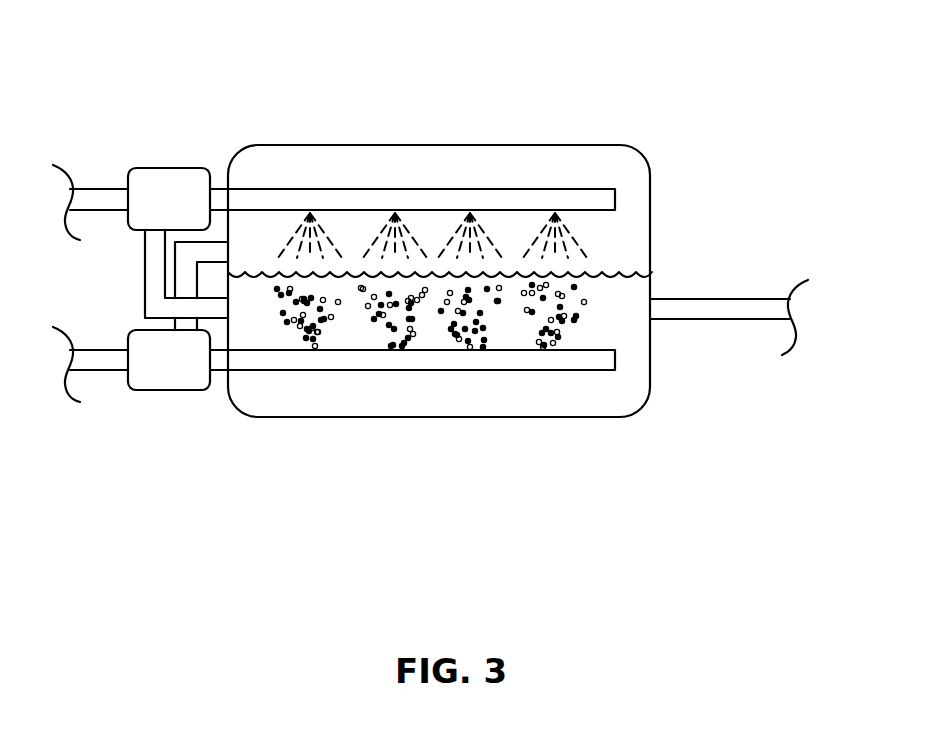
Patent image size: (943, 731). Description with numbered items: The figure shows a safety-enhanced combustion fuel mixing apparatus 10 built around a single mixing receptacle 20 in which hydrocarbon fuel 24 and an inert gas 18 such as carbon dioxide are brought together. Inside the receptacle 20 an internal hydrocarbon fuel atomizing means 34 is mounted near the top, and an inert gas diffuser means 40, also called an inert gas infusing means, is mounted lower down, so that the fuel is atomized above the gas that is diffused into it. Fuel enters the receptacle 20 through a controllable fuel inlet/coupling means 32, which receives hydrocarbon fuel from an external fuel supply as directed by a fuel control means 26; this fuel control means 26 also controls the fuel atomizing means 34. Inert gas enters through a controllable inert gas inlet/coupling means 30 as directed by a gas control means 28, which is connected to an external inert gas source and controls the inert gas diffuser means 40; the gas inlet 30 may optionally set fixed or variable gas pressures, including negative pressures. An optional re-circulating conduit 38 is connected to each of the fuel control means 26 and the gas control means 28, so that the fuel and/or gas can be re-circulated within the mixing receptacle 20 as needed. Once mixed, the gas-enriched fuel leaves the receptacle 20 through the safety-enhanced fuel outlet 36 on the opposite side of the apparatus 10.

The mixing apparatus 10 is at (280, 98).
The inert gas 18 is at (512, 170).
The mixing receptacle 20 is at (597, 418).
The fuel 24 is at (608, 384).
The fuel control means 26 is at (152, 168).
The gas control means 28 is at (145, 392).
The inert gas inlet/coupling means 30 is at (228, 360).
The fuel inlet/coupling means 32 is at (228, 200).
The fuel atomizing means 34 is at (557, 200).
The safety-enhanced fuel outlet 36 is at (650, 310).
The re-circulating conduit 38 is at (228, 308).
The inert gas diffuser means 40 is at (603, 358).